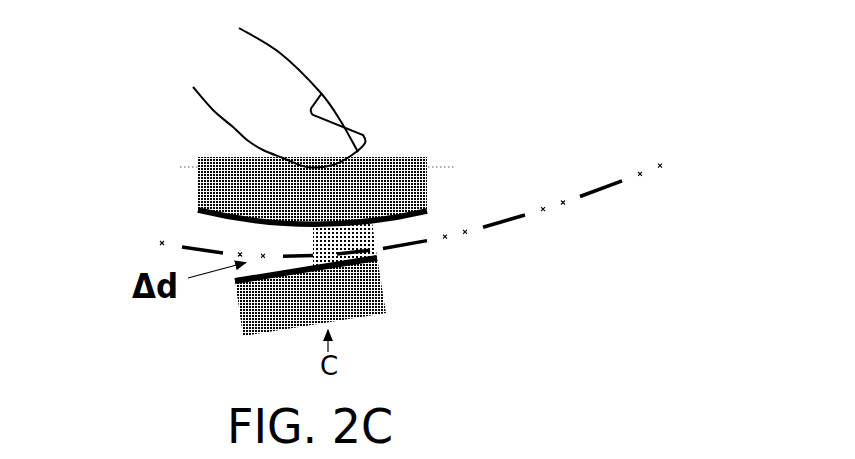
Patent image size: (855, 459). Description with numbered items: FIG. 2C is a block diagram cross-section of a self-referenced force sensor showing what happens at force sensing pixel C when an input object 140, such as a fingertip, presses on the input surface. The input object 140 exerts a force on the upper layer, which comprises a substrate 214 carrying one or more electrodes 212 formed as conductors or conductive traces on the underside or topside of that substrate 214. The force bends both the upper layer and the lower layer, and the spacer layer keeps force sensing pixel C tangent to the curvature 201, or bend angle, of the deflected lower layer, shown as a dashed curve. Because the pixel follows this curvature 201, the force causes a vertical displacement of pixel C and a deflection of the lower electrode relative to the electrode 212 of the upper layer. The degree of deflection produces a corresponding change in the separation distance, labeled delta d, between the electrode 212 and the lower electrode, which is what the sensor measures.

The input object 140 is at (322, 93).
The curvature 201 is at (193, 245).
The electrode 212 is at (435, 208).
The substrate 214 is at (386, 263).